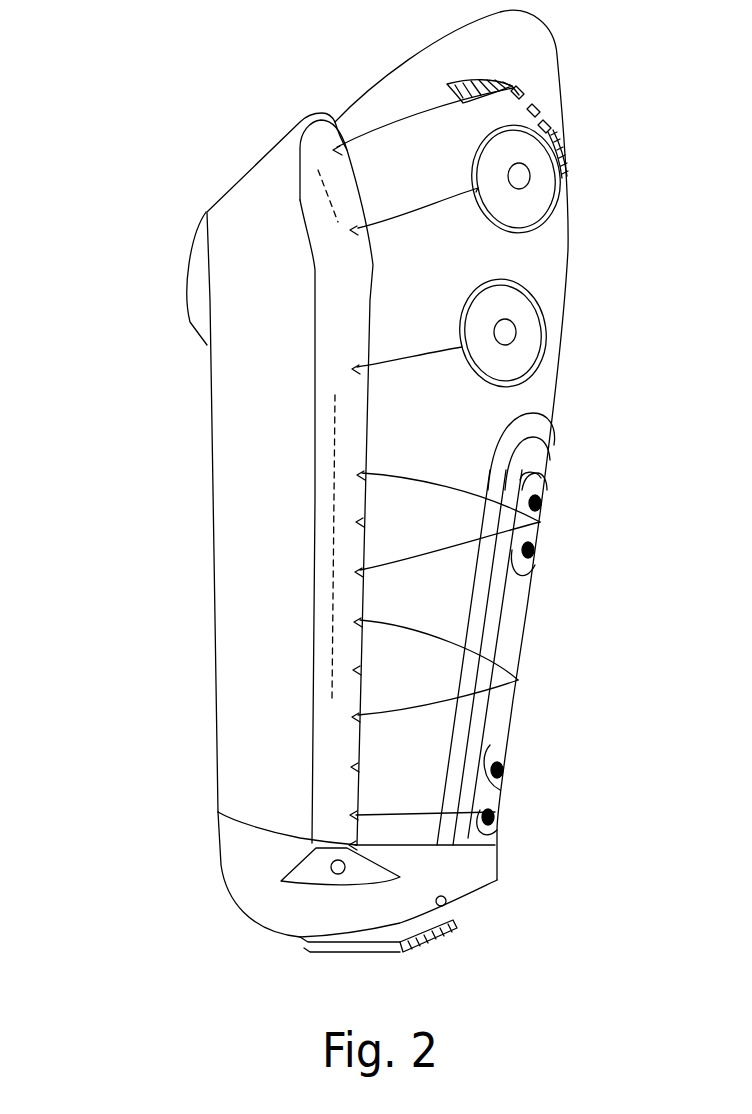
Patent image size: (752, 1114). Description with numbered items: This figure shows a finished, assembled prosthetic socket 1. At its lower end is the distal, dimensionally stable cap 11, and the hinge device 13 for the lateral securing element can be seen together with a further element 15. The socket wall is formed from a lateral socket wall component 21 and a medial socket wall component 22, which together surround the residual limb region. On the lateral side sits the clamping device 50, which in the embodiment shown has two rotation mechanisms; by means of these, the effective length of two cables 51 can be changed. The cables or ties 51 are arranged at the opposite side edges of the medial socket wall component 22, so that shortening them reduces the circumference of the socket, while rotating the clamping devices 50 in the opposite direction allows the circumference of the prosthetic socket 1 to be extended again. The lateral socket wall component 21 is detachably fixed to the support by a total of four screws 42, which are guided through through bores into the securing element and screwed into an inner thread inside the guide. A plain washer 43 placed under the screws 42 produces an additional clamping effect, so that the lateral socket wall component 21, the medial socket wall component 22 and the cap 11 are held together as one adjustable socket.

The prosthetic socket 1 is at (168, 505).
The distal, dimensionally stable cap 11 is at (300, 910).
The hinge device 13 is at (393, 880).
The bottom plate 15 is at (449, 942).
The lateral socket wall component 21 is at (557, 58).
The medial socket wall component 22 is at (216, 181).
The screws 42 is at (503, 765).
The plain washer 43 is at (496, 795).
The clamping device 50 is at (542, 178).
The cables 51 is at (547, 363).